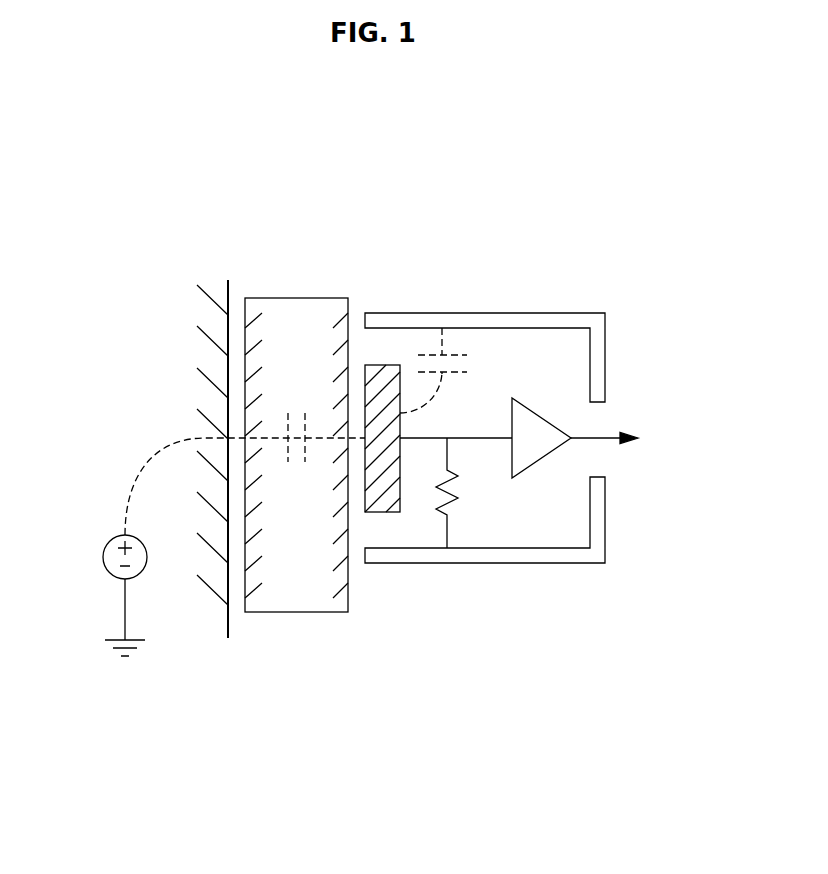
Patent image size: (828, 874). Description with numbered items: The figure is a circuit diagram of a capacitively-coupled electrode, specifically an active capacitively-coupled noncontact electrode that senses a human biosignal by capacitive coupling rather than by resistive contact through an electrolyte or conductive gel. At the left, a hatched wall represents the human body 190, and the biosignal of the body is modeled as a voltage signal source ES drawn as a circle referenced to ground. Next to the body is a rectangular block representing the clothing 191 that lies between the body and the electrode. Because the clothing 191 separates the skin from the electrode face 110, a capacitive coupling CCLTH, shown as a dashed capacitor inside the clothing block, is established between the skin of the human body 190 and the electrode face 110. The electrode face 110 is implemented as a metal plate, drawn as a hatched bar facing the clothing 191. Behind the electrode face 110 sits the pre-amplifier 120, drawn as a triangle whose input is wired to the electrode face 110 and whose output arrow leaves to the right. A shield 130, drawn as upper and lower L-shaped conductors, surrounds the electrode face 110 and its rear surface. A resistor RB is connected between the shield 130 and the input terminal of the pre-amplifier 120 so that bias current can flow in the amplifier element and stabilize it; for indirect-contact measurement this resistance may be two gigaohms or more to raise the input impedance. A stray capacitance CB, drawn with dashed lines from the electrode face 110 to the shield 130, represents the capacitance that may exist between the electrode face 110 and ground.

The electrode face 110 is at (382, 529).
The pre-amplifier 120 is at (549, 478).
The shield 130 is at (485, 313).
The human body 190 is at (182, 334).
The clothing 191 is at (292, 631).
The capacitive coupling CCLTH is at (303, 397).
The stray capacitance CB is at (454, 370).
The resistance of the bias resistor RB is at (464, 493).
The signal source ES is at (140, 595).